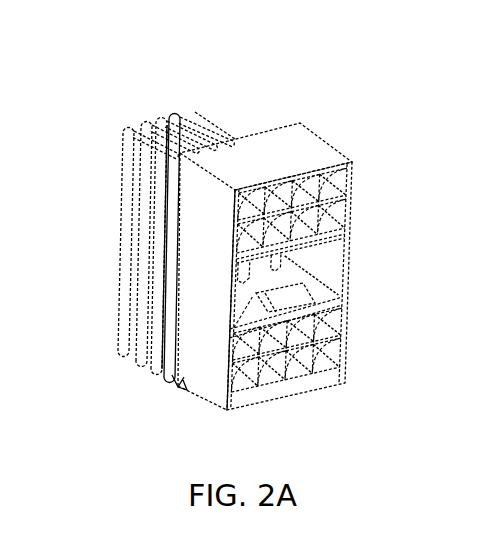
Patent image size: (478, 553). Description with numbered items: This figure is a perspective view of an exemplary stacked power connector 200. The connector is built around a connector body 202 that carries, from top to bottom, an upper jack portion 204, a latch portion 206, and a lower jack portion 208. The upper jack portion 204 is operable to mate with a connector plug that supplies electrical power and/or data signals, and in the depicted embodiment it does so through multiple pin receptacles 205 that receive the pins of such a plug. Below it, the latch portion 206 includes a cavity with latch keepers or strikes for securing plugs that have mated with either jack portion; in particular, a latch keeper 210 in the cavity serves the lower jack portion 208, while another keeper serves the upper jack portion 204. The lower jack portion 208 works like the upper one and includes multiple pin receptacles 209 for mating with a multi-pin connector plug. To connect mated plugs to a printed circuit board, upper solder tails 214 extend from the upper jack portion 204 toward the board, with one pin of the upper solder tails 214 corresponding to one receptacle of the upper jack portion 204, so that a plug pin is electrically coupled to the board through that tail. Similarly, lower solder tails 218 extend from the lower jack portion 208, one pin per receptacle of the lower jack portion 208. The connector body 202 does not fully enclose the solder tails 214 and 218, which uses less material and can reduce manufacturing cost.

The stacked power connector 200 is at (105, 91).
The connector body 202 is at (219, 284).
The upper jack portion 204 is at (356, 172).
The pin receptacles 205 is at (305, 220).
The latch portion 206 is at (356, 240).
The lower jack portion 208 is at (356, 313).
The pin receptacles 209 is at (268, 352).
The latch keeper 210 is at (266, 296).
The upper solder tails 214 is at (195, 112).
The lower solder tails 218 is at (180, 383).